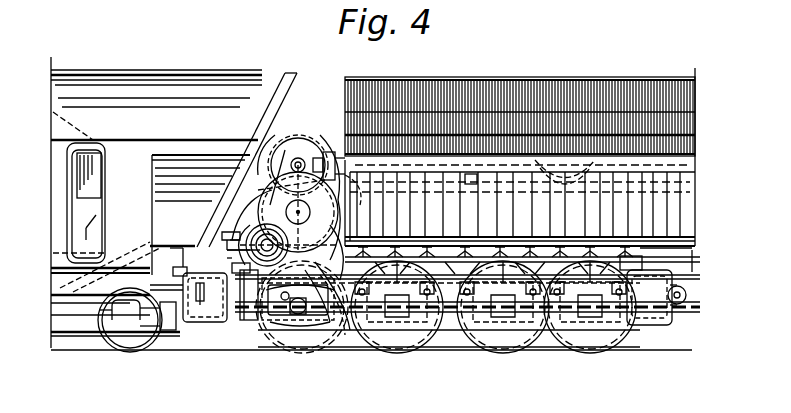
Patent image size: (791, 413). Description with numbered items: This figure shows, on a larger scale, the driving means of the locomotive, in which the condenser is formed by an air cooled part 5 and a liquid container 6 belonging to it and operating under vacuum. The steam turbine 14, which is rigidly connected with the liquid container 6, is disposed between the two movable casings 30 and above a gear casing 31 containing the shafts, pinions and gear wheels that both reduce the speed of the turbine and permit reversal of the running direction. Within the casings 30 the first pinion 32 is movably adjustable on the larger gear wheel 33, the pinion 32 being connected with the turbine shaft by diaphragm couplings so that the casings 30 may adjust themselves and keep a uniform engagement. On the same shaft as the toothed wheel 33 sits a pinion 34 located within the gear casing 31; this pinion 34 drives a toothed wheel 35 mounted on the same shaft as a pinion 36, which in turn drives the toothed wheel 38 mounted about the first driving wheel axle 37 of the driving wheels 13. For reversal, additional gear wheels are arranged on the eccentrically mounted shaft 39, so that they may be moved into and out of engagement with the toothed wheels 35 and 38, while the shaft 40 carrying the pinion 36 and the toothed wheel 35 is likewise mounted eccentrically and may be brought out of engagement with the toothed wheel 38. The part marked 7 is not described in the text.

The air cooled part 5 is at (398, 80).
The liquid container 6 is at (495, 185).
The gear housing 7 is at (336, 180).
The driving wheels 13 is at (418, 348).
The steam turbine 14 is at (282, 150).
The movable casings 30 is at (312, 155).
The gear casing 31 is at (226, 256).
The first pinion 32 is at (299, 158).
The larger gear wheel 33 is at (290, 158).
The pinion 34 is at (318, 232).
The toothed wheel 35 is at (346, 278).
The pinion 36 is at (325, 296).
The first driving wheel axle 37 is at (296, 314).
The toothed wheel 38 is at (285, 328).
The shaft 39 is at (270, 290).
The shaft 40 is at (232, 312).